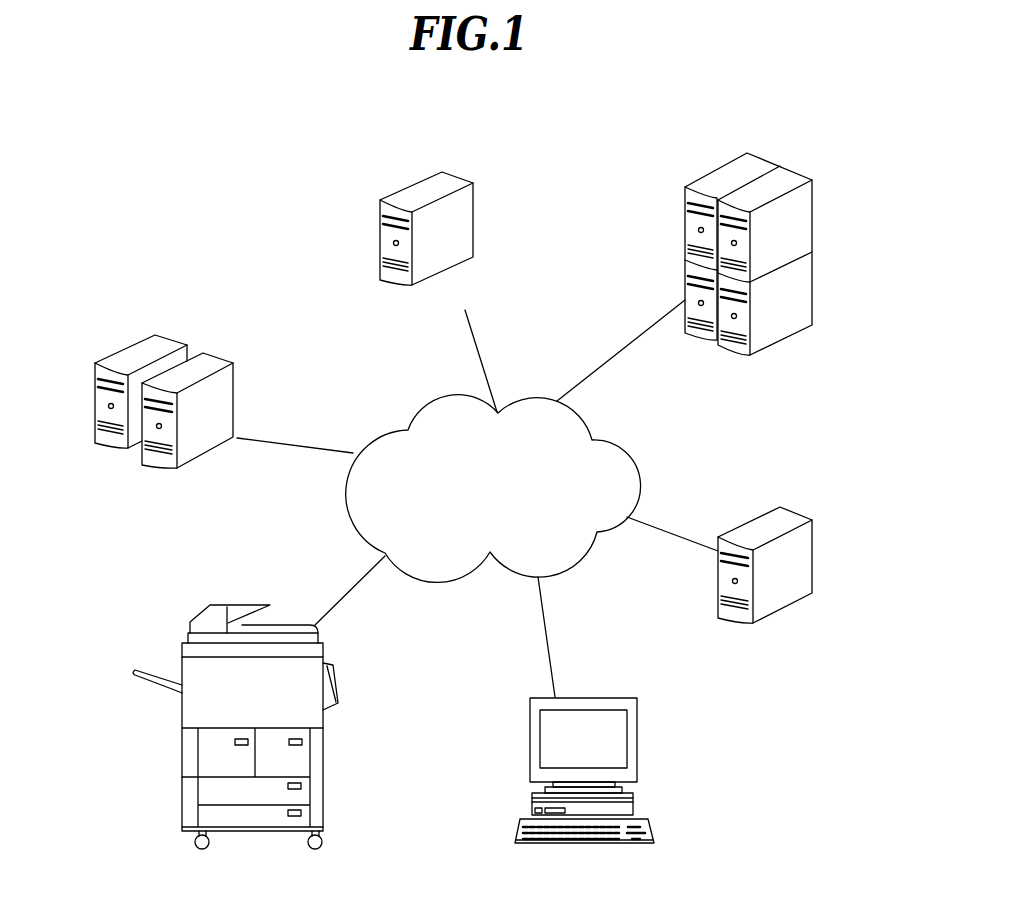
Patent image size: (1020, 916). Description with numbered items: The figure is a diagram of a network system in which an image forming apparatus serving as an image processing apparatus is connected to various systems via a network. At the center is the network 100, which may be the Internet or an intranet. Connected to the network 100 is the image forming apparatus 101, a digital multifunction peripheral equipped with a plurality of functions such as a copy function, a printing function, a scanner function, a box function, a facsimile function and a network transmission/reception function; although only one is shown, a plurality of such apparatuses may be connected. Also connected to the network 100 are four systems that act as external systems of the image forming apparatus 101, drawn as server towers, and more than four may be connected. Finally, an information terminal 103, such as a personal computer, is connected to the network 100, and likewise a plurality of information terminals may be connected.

The network 100 is at (630, 448).
The image forming apparatus 101 is at (247, 601).
The information terminal 103 is at (597, 697).